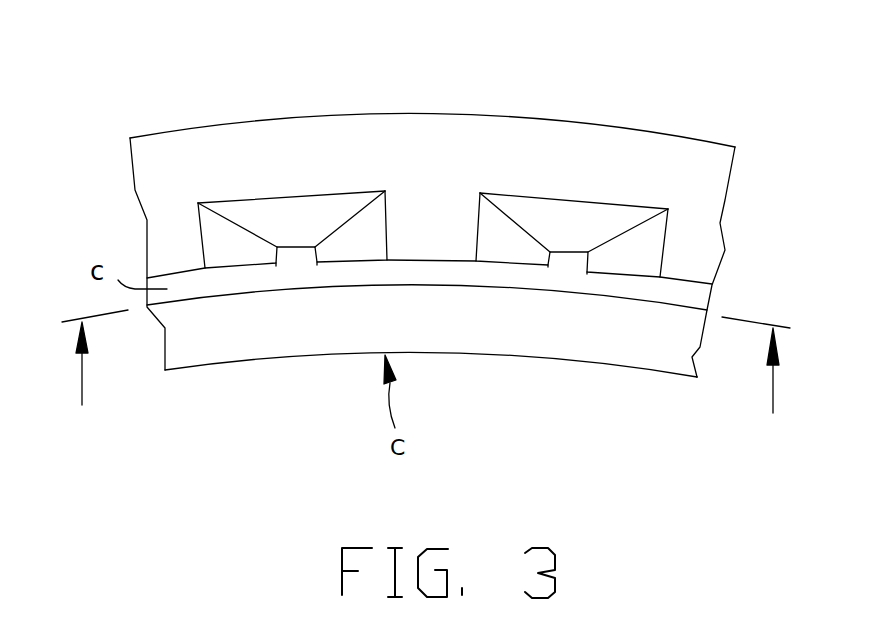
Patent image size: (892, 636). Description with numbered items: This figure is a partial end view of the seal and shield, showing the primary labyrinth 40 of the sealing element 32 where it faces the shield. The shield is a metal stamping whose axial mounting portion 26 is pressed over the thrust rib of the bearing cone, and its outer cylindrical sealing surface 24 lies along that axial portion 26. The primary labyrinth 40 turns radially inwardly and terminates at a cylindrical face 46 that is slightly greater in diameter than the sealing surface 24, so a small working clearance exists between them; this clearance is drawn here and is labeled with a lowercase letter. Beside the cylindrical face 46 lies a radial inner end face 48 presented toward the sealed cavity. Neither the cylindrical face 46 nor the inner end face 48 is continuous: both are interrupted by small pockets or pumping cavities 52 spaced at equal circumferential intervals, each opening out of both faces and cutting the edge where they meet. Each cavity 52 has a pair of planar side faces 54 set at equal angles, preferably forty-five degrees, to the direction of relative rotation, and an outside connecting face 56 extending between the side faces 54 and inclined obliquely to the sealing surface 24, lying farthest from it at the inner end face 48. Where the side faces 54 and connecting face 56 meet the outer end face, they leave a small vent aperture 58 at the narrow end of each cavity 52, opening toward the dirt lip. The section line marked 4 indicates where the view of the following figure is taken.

The sealing surface 24 is at (433, 285).
The axial mounting portion 26 is at (443, 322).
The sealing element 32 is at (495, 95).
The primary labyrinth 40 is at (563, 150).
The cylindrical face 46 is at (643, 275).
The inner end face 48 is at (685, 190).
The pumping cavities 52 is at (598, 220).
The side faces 54 is at (227, 247).
The connecting face 56 is at (307, 220).
The vent aperture 58 is at (297, 262).
The section line 4- 4 is at (427, 385).